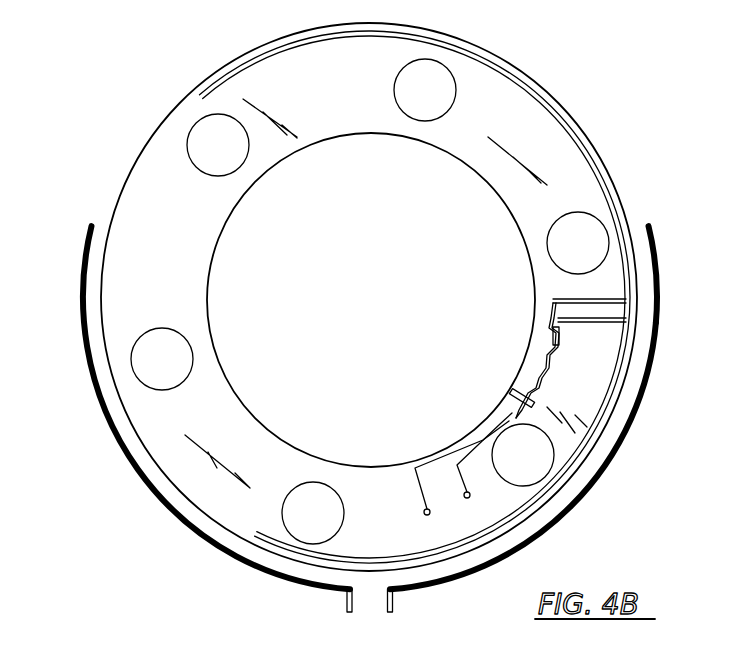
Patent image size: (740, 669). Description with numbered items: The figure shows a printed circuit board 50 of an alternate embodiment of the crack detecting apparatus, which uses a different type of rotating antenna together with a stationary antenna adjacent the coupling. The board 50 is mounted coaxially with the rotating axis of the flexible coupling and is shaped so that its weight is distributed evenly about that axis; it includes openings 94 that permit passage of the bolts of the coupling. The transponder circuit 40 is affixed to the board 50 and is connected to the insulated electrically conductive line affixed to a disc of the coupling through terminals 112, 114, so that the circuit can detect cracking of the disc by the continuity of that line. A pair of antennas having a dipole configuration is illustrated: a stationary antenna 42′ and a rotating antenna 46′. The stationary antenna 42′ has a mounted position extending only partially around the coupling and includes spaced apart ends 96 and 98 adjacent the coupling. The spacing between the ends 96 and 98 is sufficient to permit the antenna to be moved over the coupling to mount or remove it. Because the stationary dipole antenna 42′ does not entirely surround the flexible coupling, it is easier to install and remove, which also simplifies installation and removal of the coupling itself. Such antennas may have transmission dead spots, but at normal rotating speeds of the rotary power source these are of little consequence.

The printed circuit board 50 is at (164, 128).
The openings 94 is at (427, 118).
The end 98 is at (89, 229).
The end 96 is at (652, 226).
The stationary antenna 42′ is at (606, 478).
The rotating antenna 46′ is at (622, 392).
The transponder circuit 40 is at (536, 354).
The terminal 112 is at (465, 498).
The terminal 114 is at (425, 515).